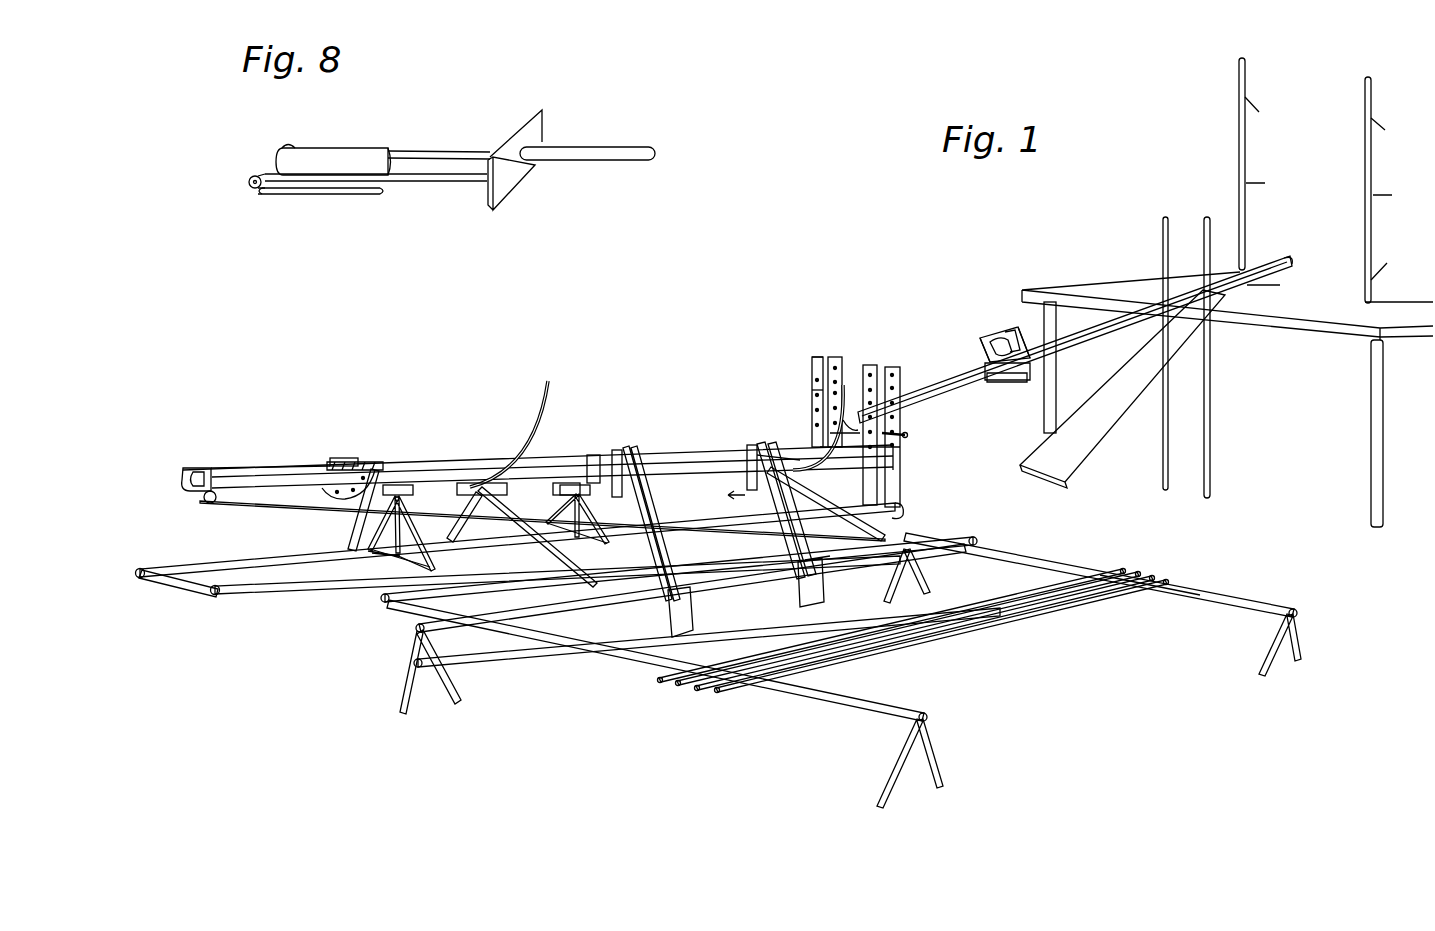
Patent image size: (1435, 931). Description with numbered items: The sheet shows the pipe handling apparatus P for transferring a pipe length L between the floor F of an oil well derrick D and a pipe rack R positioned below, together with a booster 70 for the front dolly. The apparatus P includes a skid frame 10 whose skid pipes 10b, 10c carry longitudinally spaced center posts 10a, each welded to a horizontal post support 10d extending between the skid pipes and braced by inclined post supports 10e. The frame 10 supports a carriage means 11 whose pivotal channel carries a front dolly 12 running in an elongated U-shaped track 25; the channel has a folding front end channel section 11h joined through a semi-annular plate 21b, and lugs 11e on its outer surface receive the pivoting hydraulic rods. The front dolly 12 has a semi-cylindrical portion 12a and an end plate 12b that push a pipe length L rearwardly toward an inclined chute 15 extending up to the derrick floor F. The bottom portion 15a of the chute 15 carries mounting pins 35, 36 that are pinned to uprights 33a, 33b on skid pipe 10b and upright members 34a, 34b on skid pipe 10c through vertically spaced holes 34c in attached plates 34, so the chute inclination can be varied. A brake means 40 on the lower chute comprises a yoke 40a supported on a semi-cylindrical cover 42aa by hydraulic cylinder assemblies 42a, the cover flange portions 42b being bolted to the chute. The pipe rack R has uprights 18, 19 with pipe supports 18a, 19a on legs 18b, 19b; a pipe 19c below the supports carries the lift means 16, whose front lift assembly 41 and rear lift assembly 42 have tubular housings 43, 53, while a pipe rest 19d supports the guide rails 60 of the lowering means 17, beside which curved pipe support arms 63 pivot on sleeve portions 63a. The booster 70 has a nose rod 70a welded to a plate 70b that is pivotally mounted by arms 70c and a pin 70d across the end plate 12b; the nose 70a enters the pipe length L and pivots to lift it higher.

In FIG. 1, the skid frame 10 is at (303, 598).
In FIG. 1, the center posts 10a is at (383, 563).
In FIG. 1, the skid pipe 10b is at (228, 563).
In FIG. 1, the skid pipe 10c is at (268, 597).
In FIG. 1, the horizontal post support 10d is at (387, 568).
In FIG. 1, the inclined post supports 10e is at (350, 533).
In FIG. 1, the carriage means 11 is at (438, 457).
In FIG. 1, the lugs 11e is at (375, 490).
In FIG. 1, the front end channel section 11h is at (233, 468).
In FIG. 8, the front dolly 12 is at (332, 148).
In FIG. 1, the front dolly 12 is at (343, 460).
In FIG. 8, the semi-cylindrical portion 12a is at (377, 190).
In FIG. 8, the end plate 12b is at (277, 163).
In FIG. 1, the inclined chute 15 is at (927, 386).
In FIG. 1, the bottom portion of chute 15a is at (860, 433).
In FIG. 1, the lift means 16 is at (770, 612).
In FIG. 1, the lowering means 17 is at (515, 435).
In FIG. 1, the rack upright 18 is at (1220, 597).
In FIG. 1, the pipe support 18a is at (1160, 597).
In FIG. 1, the inclined legs 18b is at (930, 577).
In FIG. 1, the rack upright 19 is at (875, 700).
In FIG. 1, the pipe support 19a is at (797, 697).
In FIG. 1, the legs 19b is at (403, 693).
In FIG. 1, the pipe 19c is at (495, 652).
In FIG. 1, the pipe rest 19d is at (452, 590).
In FIG. 1, the semi-annular plate 21b is at (315, 462).
In FIG. 1, the track 25 is at (195, 470).
In FIG. 1, the upright 33a is at (812, 365).
In FIG. 1, the upright 33b is at (847, 358).
In FIG. 1, the plate 34 is at (812, 373).
In FIG. 1, the upright member 34a is at (867, 367).
In FIG. 1, the upright member 34b is at (888, 365).
In FIG. 1, the holes 34c is at (813, 393).
In FIG. 1, the mounting pin 35 is at (905, 437).
In FIG. 1, the mounting pin 36 is at (813, 423).
In FIG. 1, the brake means 40 is at (983, 328).
In FIG. 1, the yoke 40a is at (990, 333).
In FIG. 1, the front lift assembly 41 is at (622, 441).
In FIG. 1, the rear lift assembly 42 is at (740, 443).
In FIG. 1, the hydraulic cylinder assemblies 42a is at (980, 348).
In FIG. 1, the semi-cylindrical housing cover 42aa is at (1025, 342).
In FIG. 1, the cover flange portions 42b is at (1022, 380).
In FIG. 1, the tubular housing 43 is at (683, 567).
In FIG. 1, the tubular housing 53 is at (815, 550).
In FIG. 1, the guide rails 60 is at (577, 583).
In FIG. 1, the curved pipe support arms 63 is at (538, 393).
In FIG. 1, the sleeve portion 63a is at (472, 485).
In FIG. 8, the booster 70 is at (405, 150).
In FIG. 8, the nose rod 70a is at (610, 147).
In FIG. 8, the plate 70b is at (545, 120).
In FIG. 8, the arms 70c is at (433, 152).
In FIG. 8, the pin 70d is at (250, 187).
In FIG. 1, the oil well derrick D is at (1237, 123).
In FIG. 1, the derrick floor F is at (1337, 318).
In FIG. 1, the pipe length L is at (1273, 250).
In FIG. 1, the pipe handling apparatus P is at (748, 408).
In FIG. 1, the pipe rack R is at (1197, 592).